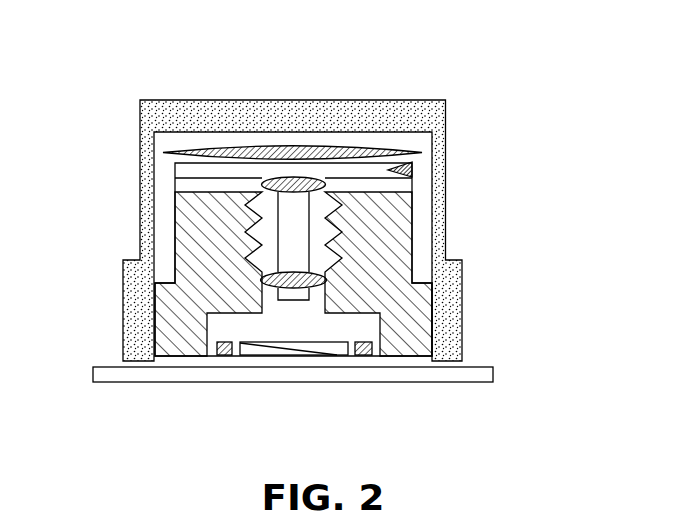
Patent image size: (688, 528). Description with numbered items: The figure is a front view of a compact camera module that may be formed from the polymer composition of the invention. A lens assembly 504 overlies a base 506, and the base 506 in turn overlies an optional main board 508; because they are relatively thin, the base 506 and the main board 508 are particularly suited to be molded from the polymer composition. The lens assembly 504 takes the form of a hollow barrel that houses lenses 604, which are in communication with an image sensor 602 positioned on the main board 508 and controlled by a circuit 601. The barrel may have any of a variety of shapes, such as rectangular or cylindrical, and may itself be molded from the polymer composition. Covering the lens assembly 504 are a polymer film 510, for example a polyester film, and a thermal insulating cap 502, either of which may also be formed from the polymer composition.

The thermal insulating cap 502 is at (415, 112).
The lens assembly 504 is at (410, 170).
The base 506 is at (398, 244).
The main board 508 is at (397, 366).
The polymer film 510 is at (318, 150).
The circuit 601 is at (359, 357).
The image sensor 602 is at (284, 357).
The lenses 604 is at (260, 276).